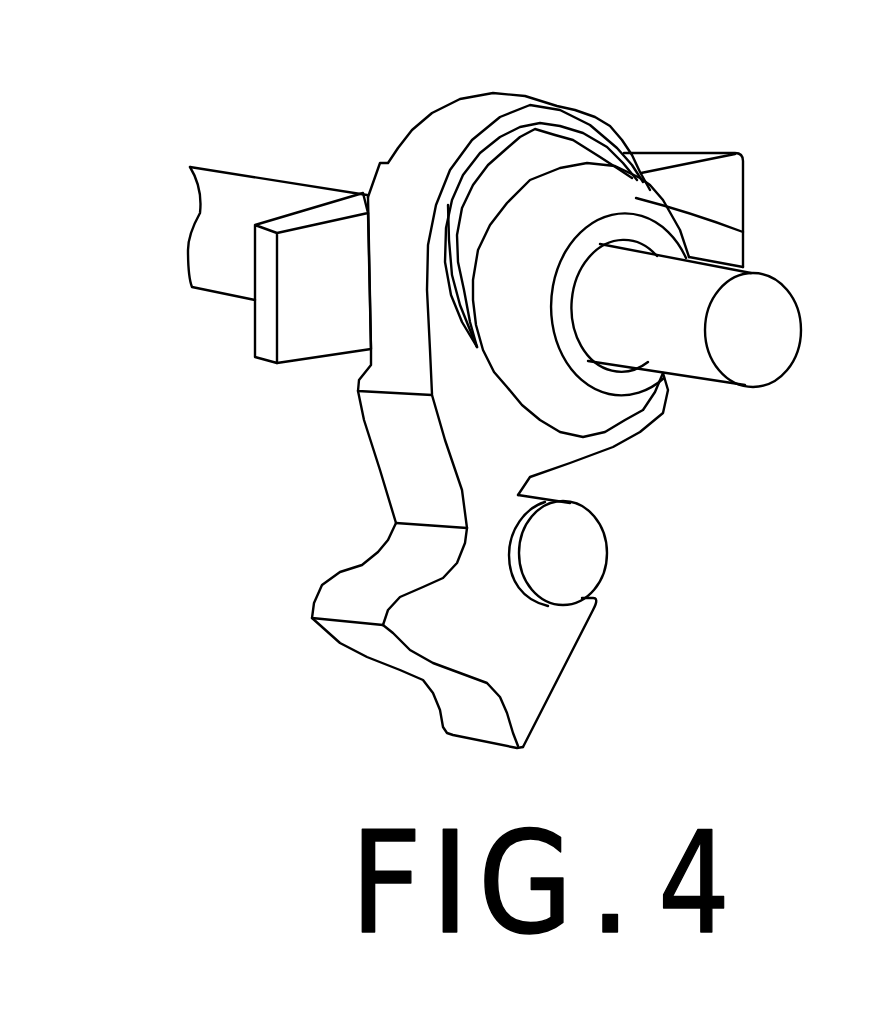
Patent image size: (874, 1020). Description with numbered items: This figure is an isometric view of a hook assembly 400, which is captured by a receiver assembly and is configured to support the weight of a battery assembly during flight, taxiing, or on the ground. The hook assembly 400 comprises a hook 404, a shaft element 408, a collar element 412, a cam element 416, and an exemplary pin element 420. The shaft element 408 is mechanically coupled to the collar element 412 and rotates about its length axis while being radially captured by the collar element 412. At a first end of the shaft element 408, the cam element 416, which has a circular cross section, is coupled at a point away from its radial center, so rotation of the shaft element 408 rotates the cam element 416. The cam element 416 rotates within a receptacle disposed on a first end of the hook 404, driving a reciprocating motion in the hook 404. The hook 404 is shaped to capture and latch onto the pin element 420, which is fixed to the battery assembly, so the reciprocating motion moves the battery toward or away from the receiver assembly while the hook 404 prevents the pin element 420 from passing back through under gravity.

The hook assembly 400 is at (523, 269).
The hook 404 is at (527, 647).
The shaft element 408 is at (217, 232).
The collar element 412 is at (743, 232).
The cam element 416 is at (568, 153).
The pin element 420 is at (577, 538).